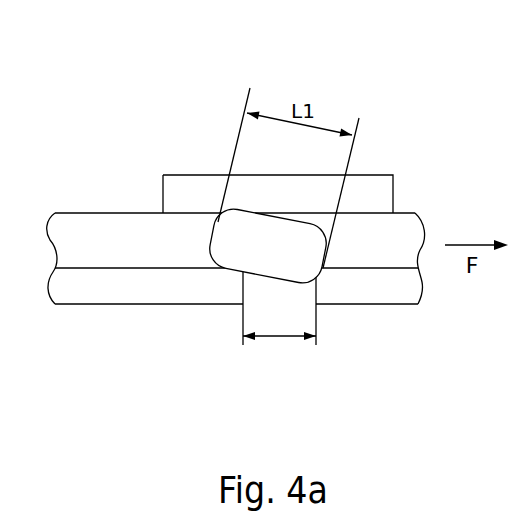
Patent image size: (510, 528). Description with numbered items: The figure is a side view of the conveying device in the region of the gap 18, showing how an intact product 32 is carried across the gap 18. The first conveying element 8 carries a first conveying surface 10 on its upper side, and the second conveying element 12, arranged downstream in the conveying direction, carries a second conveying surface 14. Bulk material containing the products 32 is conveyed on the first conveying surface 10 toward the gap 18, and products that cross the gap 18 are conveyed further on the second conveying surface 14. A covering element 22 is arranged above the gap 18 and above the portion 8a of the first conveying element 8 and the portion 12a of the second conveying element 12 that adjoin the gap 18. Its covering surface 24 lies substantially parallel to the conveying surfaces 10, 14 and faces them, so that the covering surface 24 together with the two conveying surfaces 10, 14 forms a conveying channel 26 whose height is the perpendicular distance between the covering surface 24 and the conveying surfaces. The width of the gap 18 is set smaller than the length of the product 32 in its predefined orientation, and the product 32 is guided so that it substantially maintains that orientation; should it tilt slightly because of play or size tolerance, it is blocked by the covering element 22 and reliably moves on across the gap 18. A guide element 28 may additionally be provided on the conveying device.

The first conveying element 8 is at (83, 292).
The portion of the first conveying element 8a is at (240, 290).
The first conveying surface 10 is at (110, 270).
The second conveying element 12 is at (390, 295).
The portion of the second conveying element 12a is at (317, 290).
The second conveying surface 14 is at (386, 268).
The gap 18 is at (290, 295).
The covering element 22 is at (200, 195).
The covering surface 24 is at (182, 212).
The conveying channel 26 is at (363, 238).
The guide element 28 is at (72, 212).
The product 32 is at (245, 242).